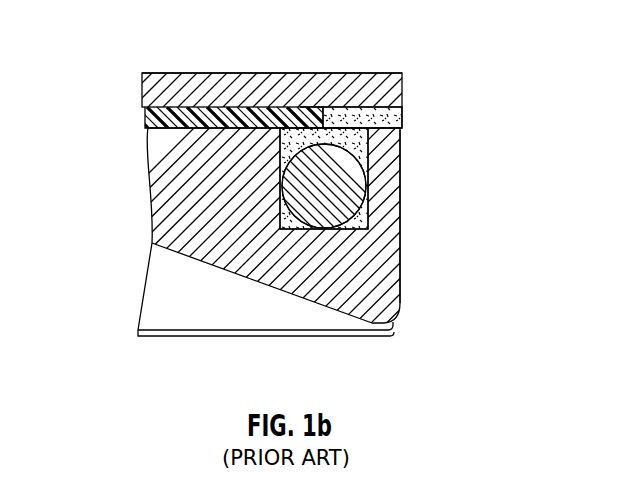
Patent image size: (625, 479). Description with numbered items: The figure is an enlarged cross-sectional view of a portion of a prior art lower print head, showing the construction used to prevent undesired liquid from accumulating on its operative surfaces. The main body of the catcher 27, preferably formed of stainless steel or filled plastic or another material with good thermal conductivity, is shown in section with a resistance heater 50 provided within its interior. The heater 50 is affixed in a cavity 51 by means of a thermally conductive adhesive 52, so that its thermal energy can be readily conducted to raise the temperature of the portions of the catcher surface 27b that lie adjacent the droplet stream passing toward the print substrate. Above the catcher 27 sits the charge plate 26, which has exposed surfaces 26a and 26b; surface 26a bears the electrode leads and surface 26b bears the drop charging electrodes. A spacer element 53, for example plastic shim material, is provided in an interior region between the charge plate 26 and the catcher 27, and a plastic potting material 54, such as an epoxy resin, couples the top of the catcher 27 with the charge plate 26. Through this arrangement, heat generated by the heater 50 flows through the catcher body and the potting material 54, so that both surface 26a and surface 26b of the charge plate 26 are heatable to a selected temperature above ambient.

The charge plate 26 is at (172, 80).
The surface of charge plate 26a is at (384, 73).
The surface of charge plate 26b is at (402, 92).
The catcher 27 is at (142, 275).
The catcher surface 27b is at (401, 255).
The resistance heater 50 is at (301, 162).
The cavity 51 is at (246, 279).
The thermally conductive adhesive 52 is at (355, 143).
The spacer element 53 is at (313, 112).
The plastic potting material 54 is at (358, 117).